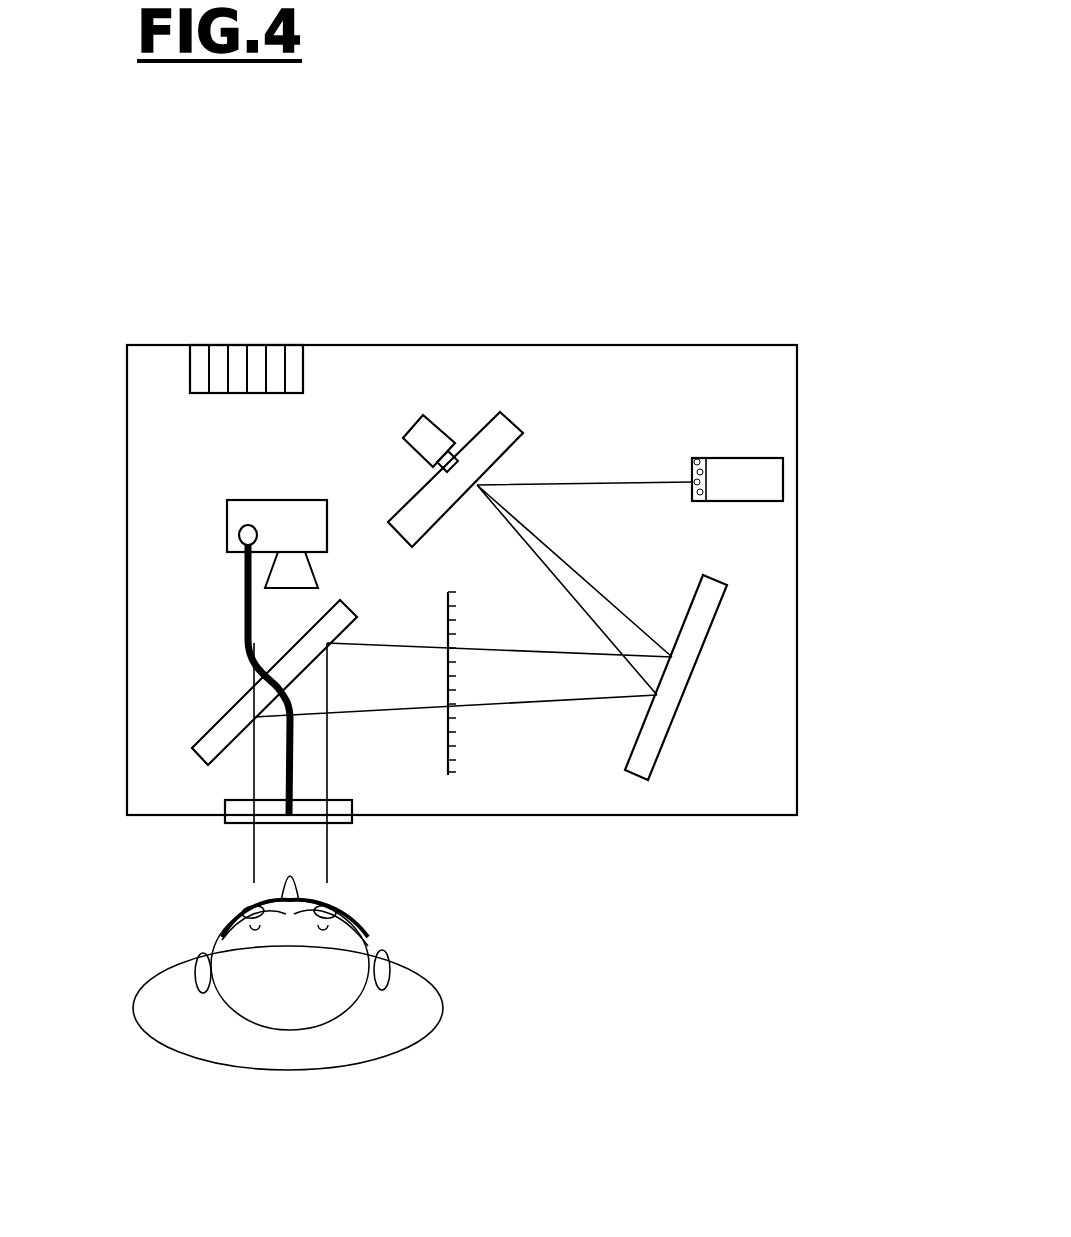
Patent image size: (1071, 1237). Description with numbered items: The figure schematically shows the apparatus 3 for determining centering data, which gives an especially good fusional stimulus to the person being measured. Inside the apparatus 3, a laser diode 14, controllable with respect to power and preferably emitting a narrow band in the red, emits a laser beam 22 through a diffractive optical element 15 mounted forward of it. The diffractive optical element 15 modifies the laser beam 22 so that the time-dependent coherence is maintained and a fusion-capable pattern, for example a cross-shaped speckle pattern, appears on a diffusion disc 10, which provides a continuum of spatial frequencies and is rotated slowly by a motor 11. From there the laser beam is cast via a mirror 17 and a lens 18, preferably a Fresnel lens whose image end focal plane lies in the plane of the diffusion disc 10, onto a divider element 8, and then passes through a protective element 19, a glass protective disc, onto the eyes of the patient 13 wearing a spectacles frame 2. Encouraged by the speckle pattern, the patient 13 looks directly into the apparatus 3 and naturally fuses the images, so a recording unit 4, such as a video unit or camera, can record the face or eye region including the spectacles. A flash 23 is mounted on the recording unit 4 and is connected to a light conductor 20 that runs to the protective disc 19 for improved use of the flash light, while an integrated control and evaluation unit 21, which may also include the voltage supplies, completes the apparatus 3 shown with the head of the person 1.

The head of subject 1 is at (230, 956).
The spectacles frame 2 is at (238, 913).
The apparatus 3 is at (722, 320).
The recording unit 4 is at (227, 506).
The divider element 8 is at (222, 726).
The diffusion disc 10 is at (502, 424).
The motor 11 is at (426, 432).
The patient 13 is at (445, 1000).
The laser diode 14 is at (770, 475).
The diffractive optical element 15 is at (706, 500).
The mirror 17 is at (648, 762).
The lens 18 is at (448, 775).
The protective element 19 is at (335, 810).
The light conductor 20 is at (248, 641).
The control and evaluation unit 21 is at (258, 362).
The laser beam 22 is at (600, 482).
The flash 23 is at (239, 535).